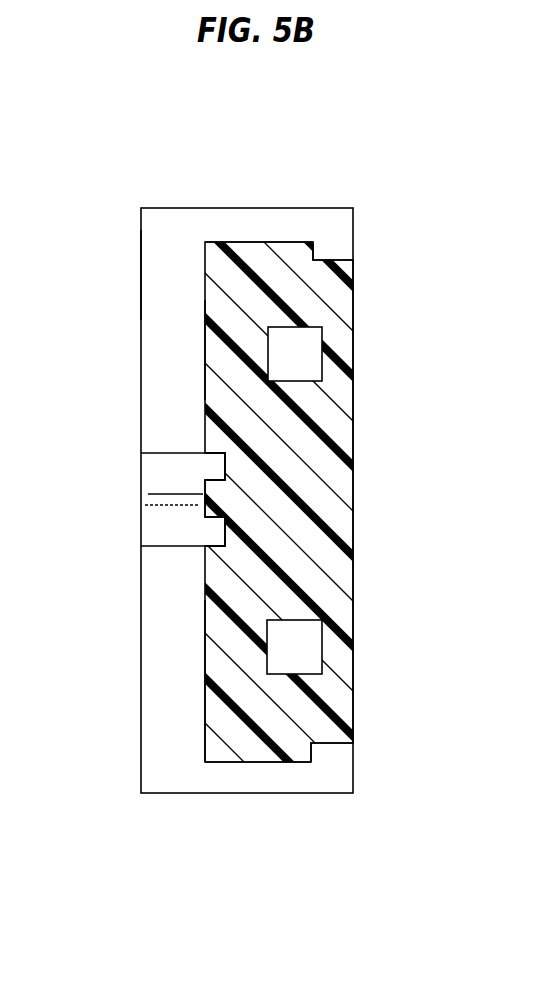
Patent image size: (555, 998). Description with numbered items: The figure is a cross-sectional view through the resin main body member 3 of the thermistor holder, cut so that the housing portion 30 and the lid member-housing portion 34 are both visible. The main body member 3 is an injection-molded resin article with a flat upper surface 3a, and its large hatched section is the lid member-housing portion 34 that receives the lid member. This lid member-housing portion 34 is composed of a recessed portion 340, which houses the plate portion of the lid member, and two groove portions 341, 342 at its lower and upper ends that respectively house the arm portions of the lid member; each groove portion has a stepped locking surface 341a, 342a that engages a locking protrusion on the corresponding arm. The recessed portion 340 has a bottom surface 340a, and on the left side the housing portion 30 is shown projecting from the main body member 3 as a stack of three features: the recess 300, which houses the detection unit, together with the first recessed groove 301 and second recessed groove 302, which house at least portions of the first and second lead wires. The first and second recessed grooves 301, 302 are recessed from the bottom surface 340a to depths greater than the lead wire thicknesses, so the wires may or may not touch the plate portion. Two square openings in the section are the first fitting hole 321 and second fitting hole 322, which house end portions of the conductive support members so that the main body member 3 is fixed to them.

The main body member 3 is at (243, 208).
The flat upper surface 3a is at (141, 272).
The housing portion 30 is at (77, 445).
The recess 300 is at (148, 494).
The first recessed groove 301 is at (213, 530).
The second recessed groove 302 is at (213, 472).
The lid member-housing portion 34 is at (196, 210).
The recessed portion 340 is at (168, 701).
The bottom surface 340a is at (205, 345).
The groove portion 341 is at (277, 777).
The locking surface 341a is at (313, 746).
The groove portion 342 is at (277, 232).
The locking surface 342a is at (315, 252).
The first fitting hole 321 is at (310, 648).
The second fitting hole 322 is at (313, 340).